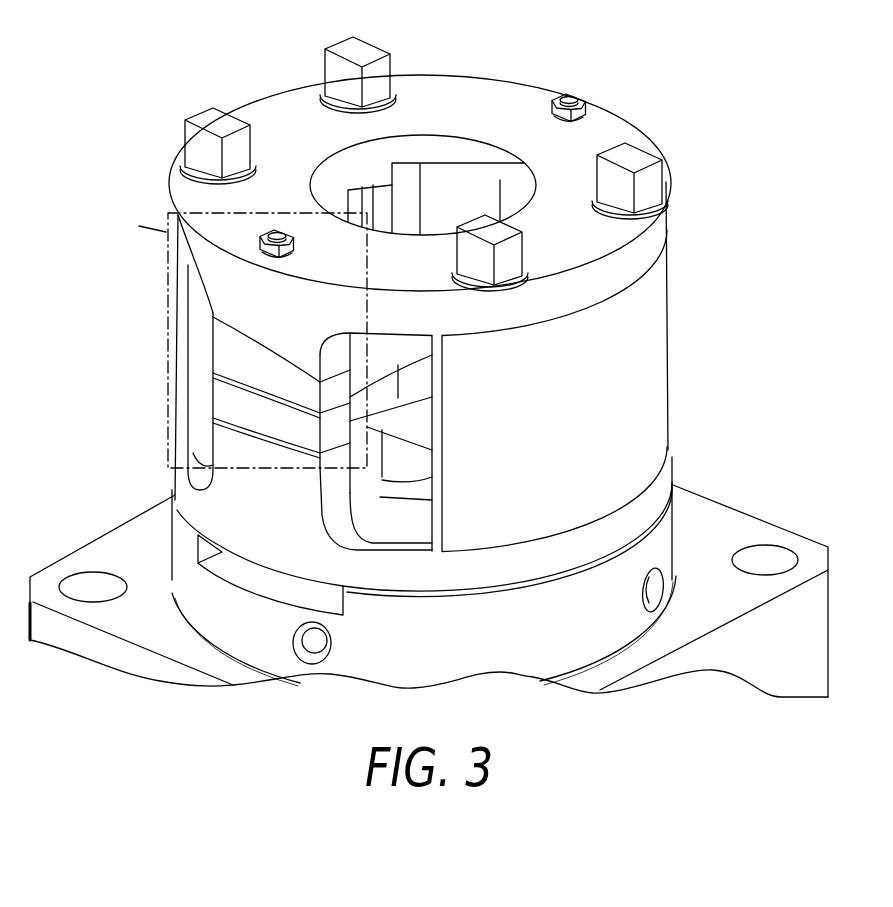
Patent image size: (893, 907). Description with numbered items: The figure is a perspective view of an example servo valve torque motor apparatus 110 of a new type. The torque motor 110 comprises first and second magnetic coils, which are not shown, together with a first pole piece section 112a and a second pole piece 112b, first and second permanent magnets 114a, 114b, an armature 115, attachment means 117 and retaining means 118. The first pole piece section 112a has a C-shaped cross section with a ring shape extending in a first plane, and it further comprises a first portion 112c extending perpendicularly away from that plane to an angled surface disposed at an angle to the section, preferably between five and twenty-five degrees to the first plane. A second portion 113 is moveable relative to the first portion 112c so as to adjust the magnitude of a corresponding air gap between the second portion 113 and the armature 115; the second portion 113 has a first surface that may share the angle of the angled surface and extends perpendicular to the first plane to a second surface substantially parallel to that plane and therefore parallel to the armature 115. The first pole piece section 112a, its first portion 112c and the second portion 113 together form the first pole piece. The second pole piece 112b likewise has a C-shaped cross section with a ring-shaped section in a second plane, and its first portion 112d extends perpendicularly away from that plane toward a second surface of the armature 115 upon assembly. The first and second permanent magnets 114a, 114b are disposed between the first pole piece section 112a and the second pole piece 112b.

The servo valve torque motor apparatus 110 is at (745, 156).
The first pole piece section 112a is at (282, 113).
The second pole piece 112b is at (230, 513).
The first portion 112c is at (235, 333).
The first portion 112d is at (230, 450).
The second portion 113 is at (230, 364).
The first permanent magnet 114a is at (656, 358).
The second permanent magnet 114b is at (410, 193).
The armature 115 is at (230, 407).
The attachment means 117 is at (276, 230).
The retaining means 118 is at (290, 258).